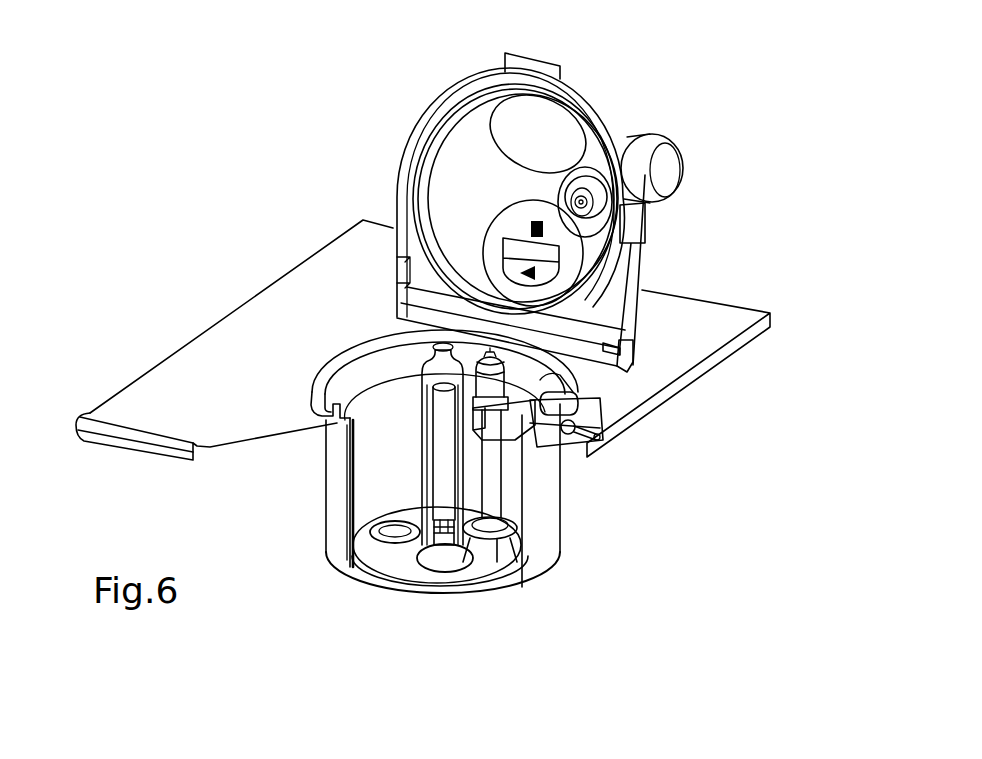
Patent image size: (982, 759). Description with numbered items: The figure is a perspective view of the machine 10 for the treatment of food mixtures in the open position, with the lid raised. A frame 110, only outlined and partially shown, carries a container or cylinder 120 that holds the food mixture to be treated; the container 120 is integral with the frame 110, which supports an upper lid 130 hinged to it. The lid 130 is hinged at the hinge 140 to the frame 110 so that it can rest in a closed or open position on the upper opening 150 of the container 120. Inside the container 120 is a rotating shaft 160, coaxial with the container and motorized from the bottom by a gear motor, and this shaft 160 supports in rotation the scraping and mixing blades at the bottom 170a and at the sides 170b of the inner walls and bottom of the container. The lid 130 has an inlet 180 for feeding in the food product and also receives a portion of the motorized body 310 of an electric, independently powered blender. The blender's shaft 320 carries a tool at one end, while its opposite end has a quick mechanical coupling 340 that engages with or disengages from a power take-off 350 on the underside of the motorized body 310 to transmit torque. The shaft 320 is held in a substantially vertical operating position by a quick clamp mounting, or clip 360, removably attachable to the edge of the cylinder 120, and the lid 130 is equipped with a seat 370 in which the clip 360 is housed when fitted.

The machine for the treatment of food mixtures 10 is at (607, 513).
The frame 110 is at (217, 390).
The container or cylinder 120 is at (541, 530).
The upper lid 130 is at (442, 102).
The hinge 140 is at (653, 340).
The upper opening 150 is at (360, 383).
The rotating shaft 160 is at (443, 453).
The bottom scraping and mixing blades 170a is at (385, 565).
The side scraping and mixing blades 170b is at (380, 500).
The inlet 180 is at (540, 272).
The motorized body 310 is at (672, 158).
The shaft 320 is at (486, 485).
The quick mechanical coupling 340 is at (557, 365).
The power take-off 350 is at (585, 203).
The quick clamp mounting (clip) 360 is at (568, 435).
The seat 370 is at (642, 228).